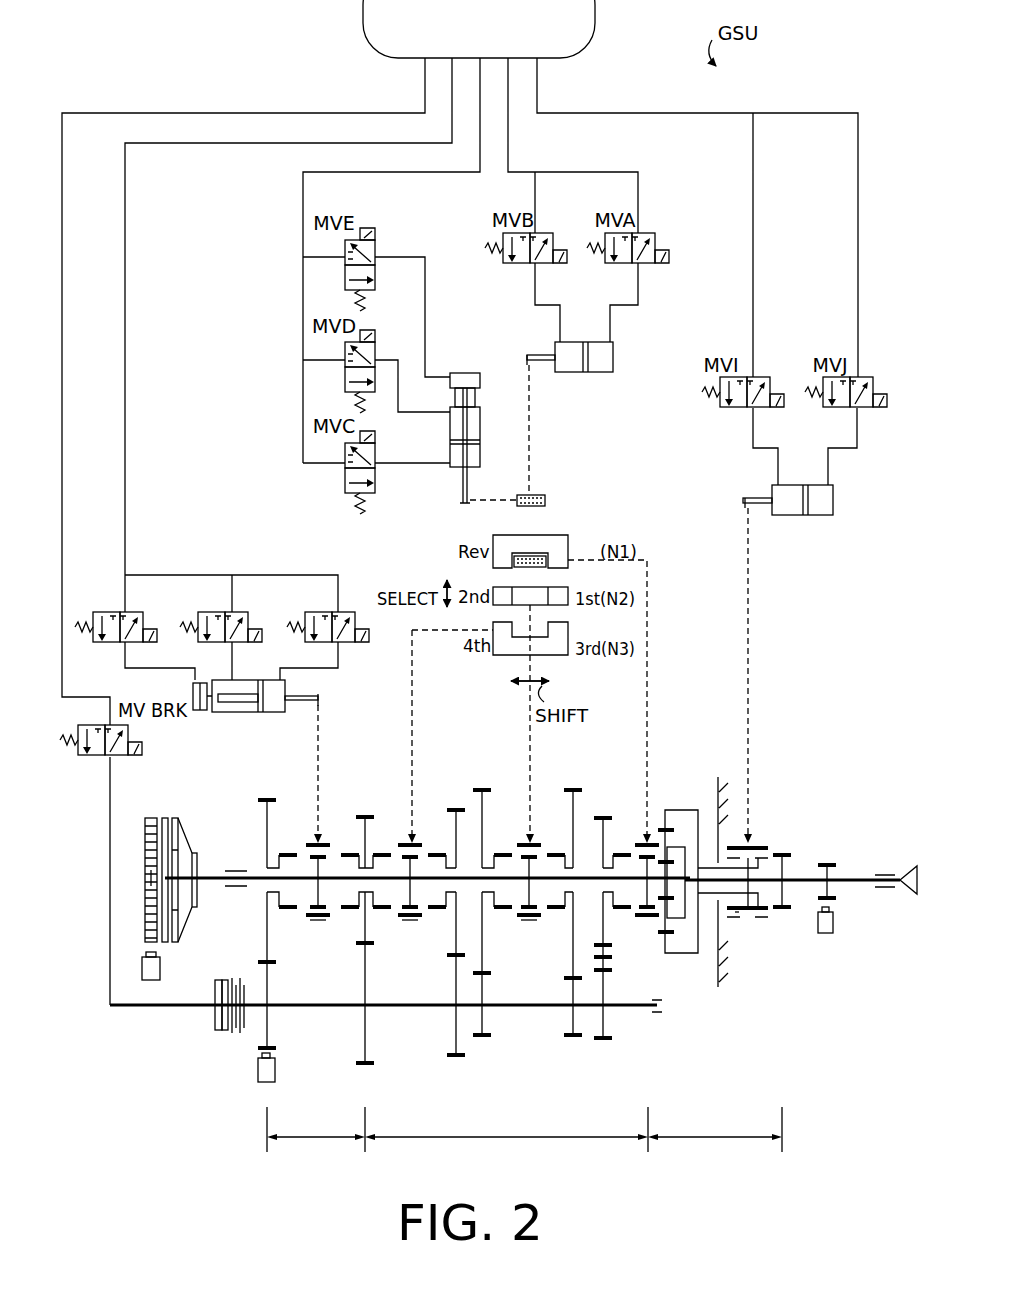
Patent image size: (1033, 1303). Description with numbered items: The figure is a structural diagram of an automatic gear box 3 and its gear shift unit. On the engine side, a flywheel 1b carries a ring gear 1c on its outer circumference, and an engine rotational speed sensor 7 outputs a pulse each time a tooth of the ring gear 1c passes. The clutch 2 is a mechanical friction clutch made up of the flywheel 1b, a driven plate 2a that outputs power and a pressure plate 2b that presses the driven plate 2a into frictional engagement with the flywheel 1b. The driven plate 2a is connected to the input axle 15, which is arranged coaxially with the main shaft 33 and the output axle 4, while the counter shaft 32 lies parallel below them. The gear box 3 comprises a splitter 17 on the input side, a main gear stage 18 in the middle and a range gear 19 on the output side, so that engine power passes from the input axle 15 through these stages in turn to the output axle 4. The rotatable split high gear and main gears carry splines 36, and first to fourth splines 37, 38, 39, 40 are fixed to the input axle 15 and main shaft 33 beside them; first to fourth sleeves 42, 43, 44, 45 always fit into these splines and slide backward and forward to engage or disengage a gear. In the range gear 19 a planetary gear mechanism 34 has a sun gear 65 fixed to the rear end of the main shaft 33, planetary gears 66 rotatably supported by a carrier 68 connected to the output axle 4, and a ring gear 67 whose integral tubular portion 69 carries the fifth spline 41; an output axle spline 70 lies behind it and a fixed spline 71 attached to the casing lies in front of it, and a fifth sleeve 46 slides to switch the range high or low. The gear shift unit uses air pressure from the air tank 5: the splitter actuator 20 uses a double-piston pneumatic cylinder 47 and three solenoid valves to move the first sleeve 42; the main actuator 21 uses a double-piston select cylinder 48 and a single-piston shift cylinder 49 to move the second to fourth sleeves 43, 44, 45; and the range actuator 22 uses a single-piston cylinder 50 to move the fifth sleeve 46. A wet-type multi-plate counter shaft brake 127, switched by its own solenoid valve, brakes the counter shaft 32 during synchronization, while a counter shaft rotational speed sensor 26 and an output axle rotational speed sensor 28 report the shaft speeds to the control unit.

The air tank 5 is at (470, 27).
The splitter actuator 20 is at (224, 544).
The main actuator 21 is at (535, 424).
The range actuator 22 is at (809, 547).
The pneumatic cylinder 47 is at (270, 712).
The pneumatic cylinder 48 is at (481, 424).
The pneumatic cylinder 49 is at (596, 372).
The pneumatic cylinder 50 is at (835, 500).
The clutch 2 is at (189, 833).
The driven plate 2a is at (168, 818).
The pressure plate 2b is at (183, 822).
The flywheel 1b is at (149, 818).
The ring gear 1c is at (150, 878).
The engine rotational speed sensor 7 is at (160, 970).
The input axle 15 is at (262, 882).
The main shaft 33 is at (598, 882).
The counter shaft 32 is at (524, 1010).
The splines 36 is at (451, 895).
The first sleeve 42 is at (322, 843).
The second sleeve 43 is at (415, 843).
The third sleeve 44 is at (535, 843).
The fourth sleeve 45 is at (650, 843).
The fifth sleeve 46 is at (755, 843).
The first spline 37 is at (313, 920).
The second spline 38 is at (408, 920).
The third spline 39 is at (528, 920).
The fourth spline 40 is at (640, 918).
The gear box 3 is at (513, 839).
The counter shaft rotational speed sensor 26 is at (262, 1082).
The counter shaft brake 127 is at (228, 1045).
The planetary gear mechanism 34 is at (743, 900).
The sun gear 65 is at (688, 869).
The planetary gears 66 is at (685, 848).
The ring gear 67 is at (673, 830).
The carrier 68 is at (690, 905).
The tubular portion 69 is at (712, 893).
The output axle spline 70 is at (783, 909).
The fixed spline 71 is at (737, 912).
The fifth spline 41 is at (770, 910).
The output axle 4 is at (797, 878).
The output axle rotational speed sensor 28 is at (833, 924).
The splitter 17 is at (316, 1137).
The main gear stage 18 is at (506, 1138).
The range gear 19 is at (715, 1139).